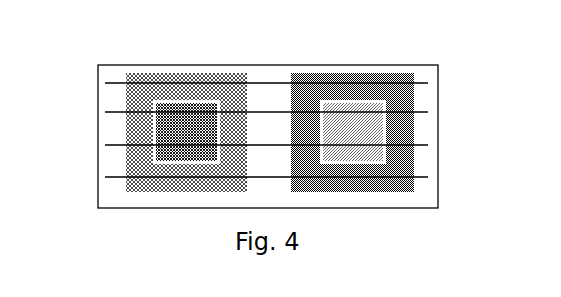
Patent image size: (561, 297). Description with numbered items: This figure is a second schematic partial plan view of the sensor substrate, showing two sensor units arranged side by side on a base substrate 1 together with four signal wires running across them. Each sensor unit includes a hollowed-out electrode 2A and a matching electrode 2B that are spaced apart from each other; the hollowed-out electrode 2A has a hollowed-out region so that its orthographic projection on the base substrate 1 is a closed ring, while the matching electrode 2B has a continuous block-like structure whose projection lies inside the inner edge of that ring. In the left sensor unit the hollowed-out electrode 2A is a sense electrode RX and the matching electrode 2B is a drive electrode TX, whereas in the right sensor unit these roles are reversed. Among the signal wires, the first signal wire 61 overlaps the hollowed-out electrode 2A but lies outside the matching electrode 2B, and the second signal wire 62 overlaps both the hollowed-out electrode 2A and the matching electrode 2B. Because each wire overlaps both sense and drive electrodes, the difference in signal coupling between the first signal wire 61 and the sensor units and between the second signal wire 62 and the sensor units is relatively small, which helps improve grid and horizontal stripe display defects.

The base substrate 1 is at (438, 197).
The hollowed-out electrode 2A is at (240, 80).
The matching electrode 2B is at (158, 156).
The first signal wire 61 is at (110, 83).
The second signal wire 62 is at (122, 113).